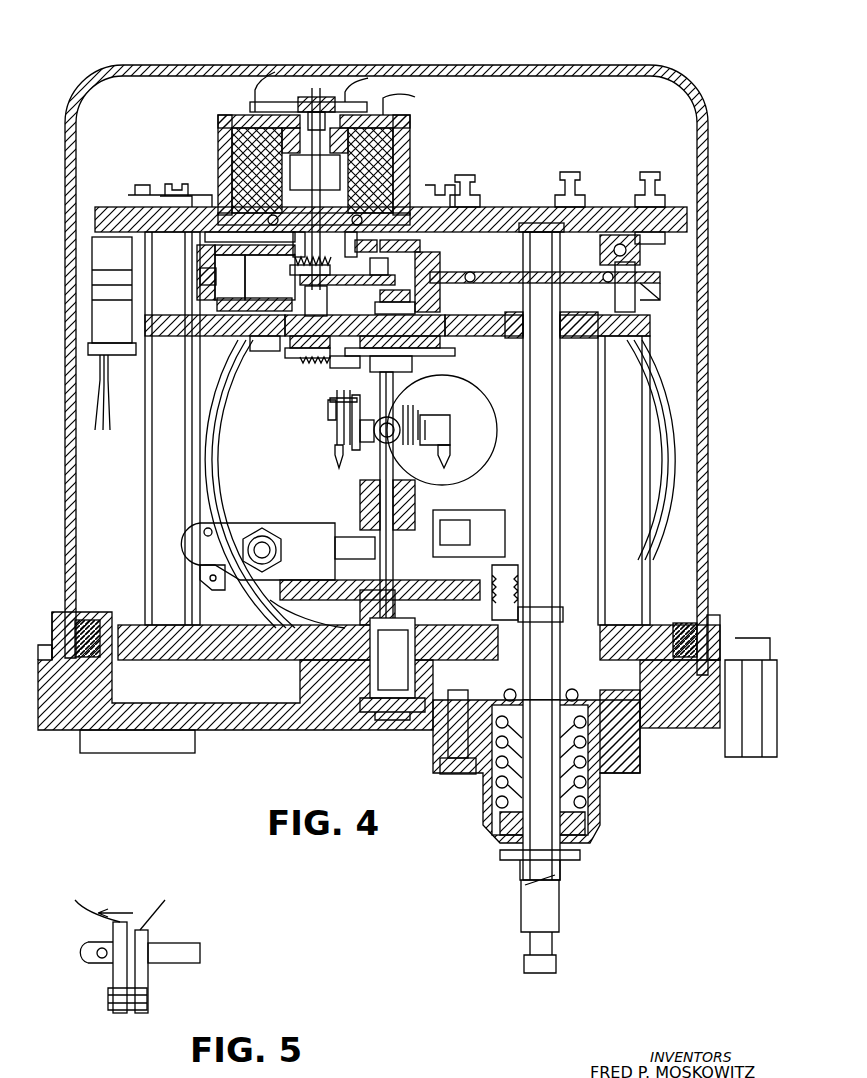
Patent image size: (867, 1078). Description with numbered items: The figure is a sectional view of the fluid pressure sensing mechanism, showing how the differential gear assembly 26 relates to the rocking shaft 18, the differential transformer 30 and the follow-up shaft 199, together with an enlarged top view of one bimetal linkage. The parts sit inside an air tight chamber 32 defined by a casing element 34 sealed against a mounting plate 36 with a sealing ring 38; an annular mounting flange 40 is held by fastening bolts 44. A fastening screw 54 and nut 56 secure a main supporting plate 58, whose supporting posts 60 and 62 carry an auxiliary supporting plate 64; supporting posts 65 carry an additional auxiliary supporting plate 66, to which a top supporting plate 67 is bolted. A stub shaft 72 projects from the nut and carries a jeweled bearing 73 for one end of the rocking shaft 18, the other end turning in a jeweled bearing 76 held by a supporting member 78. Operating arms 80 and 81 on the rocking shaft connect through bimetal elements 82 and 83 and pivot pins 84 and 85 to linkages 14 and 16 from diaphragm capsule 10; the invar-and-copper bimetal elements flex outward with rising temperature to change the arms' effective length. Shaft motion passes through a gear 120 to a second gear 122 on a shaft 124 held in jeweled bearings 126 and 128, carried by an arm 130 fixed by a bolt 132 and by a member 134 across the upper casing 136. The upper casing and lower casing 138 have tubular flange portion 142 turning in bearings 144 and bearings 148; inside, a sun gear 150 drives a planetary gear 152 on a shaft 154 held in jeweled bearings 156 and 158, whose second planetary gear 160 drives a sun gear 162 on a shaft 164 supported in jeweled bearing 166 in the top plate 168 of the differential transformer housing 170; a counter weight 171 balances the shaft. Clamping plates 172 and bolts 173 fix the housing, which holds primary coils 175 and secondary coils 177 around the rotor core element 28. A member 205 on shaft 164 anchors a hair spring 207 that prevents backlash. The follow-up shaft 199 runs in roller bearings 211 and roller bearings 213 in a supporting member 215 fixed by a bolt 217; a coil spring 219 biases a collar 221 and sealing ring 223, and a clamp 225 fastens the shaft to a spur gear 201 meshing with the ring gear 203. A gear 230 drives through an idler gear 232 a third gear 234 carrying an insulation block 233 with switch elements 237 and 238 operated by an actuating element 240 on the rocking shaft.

In FIG. 4, the diaphragm capsule 10 is at (258, 467).
In FIG. 4, the linkage 14 is at (452, 428).
In FIG. 4, the linkage 16 is at (336, 412).
In FIG. 4, the rocking shaft 18 is at (380, 465).
In FIG. 4, the differential gear assembly 26 is at (215, 262).
In FIG. 4, the rotor core element 28 is at (280, 165).
In FIG. 4, the differential transformer 30 is at (205, 158).
In FIG. 4, the air tight chamber 32 is at (487, 88).
In FIG. 4, the casing element 34 is at (560, 70).
In FIG. 4, the mounting plate 36 is at (285, 730).
In FIG. 4, the sealing ring 38 is at (85, 620).
In FIG. 4, the annular mounting flange 40 is at (40, 648).
In FIG. 4, the fastening bolt 44 is at (755, 650).
In FIG. 4, the fastening screw 54 is at (392, 720).
In FIG. 4, the nut 56 is at (360, 620).
In FIG. 4, the main supporting plate 58 is at (240, 660).
In FIG. 4, the supporting post 60 is at (145, 455).
In FIG. 4, the supporting post 62 is at (605, 441).
In FIG. 4, the auxiliary supporting plate 64 is at (205, 336).
In FIG. 4, the supporting post 65 is at (145, 312).
In FIG. 4, the additional auxiliary supporting plate 66 is at (100, 216).
In FIG. 4, the top supporting plate 67 is at (525, 200).
In FIG. 4, the stub shaft 72 is at (405, 605).
In FIG. 4, the jeweled bearing 73 is at (360, 537).
In FIG. 4, the jeweled bearing 76 is at (405, 365).
In FIG. 4, the supporting member 78 is at (405, 310).
In FIG. 4, the operating arm 80 is at (400, 420).
In FIG. 4, the operating arm 81 is at (355, 411).
In FIG. 5, the operating arm 81 is at (185, 966).
In FIG. 4, the bimetal element 82 is at (420, 420).
In FIG. 4, the bimetal element 83 is at (330, 405).
In FIG. 5, the bimetal element 83 is at (108, 980).
In FIG. 4, the pivot pin 84 is at (450, 455).
In FIG. 4, the pivot pin 85 is at (333, 440).
In FIG. 4, the gear 120 is at (440, 356).
In FIG. 4, the second gear 122 is at (300, 360).
In FIG. 4, the shaft 124 is at (320, 304).
In FIG. 4, the jeweled bearing 126 is at (312, 365).
In FIG. 4, the jeweled bearing 128 is at (300, 267).
In FIG. 4, the arm 130 is at (290, 348).
In FIG. 4, the bolt 132 is at (255, 355).
In FIG. 4, the member 134 is at (347, 274).
In FIG. 4, the upper casing 136 is at (248, 230).
In FIG. 4, the lower casing 138 is at (217, 303).
In FIG. 4, the tubular flange portion 142 is at (360, 245).
In FIG. 4, the bearings 144 is at (341, 175).
In FIG. 4, the bearings 148 is at (345, 365).
In FIG. 4, the sun gear 150 is at (270, 277).
In FIG. 4, the planetary gear 152 is at (428, 277).
In FIG. 4, the shaft 154 is at (385, 267).
In FIG. 4, the jeweled bearing 156 is at (409, 296).
In FIG. 4, the jeweled bearing 158 is at (380, 236).
In FIG. 4, the second planetary gear 160 is at (407, 236).
In FIG. 4, the sun gear 162 is at (302, 241).
In FIG. 4, the shaft 164 is at (320, 100).
In FIG. 4, the jeweled bearing 166 is at (350, 98).
In FIG. 4, the top plate 168 is at (410, 110).
In FIG. 4, the differential transformer housing 170 is at (400, 145).
In FIG. 4, the counter weight 171 is at (200, 278).
In FIG. 4, the clamping plate 172 is at (135, 195).
In FIG. 4, the bolt 173 is at (165, 184).
In FIG. 4, the primary coils 175 is at (256, 112).
In FIG. 4, the secondary coils 177 is at (250, 128).
In FIG. 4, the follow-up shaft 199 is at (552, 393).
In FIG. 4, the spur gear 201 is at (655, 272).
In FIG. 4, the ring gear 203 is at (545, 266).
In FIG. 4, the member 205 is at (308, 97).
In FIG. 4, the hair spring 207 is at (305, 110).
In FIG. 4, the roller bearings 211 is at (565, 338).
In FIG. 4, the roller bearings 213 is at (580, 848).
In FIG. 4, the supporting member 215 is at (625, 770).
In FIG. 4, the bolt 217 is at (455, 775).
In FIG. 4, the coil spring 219 is at (600, 815).
In FIG. 4, the collar 221 is at (600, 702).
In FIG. 4, the sealing ring 223 is at (508, 692).
In FIG. 4, the clamp 225 is at (595, 249).
In FIG. 4, the gear 230 is at (565, 605).
In FIG. 4, the idler gear 232 is at (518, 585).
In FIG. 4, the insulation block 233 is at (298, 556).
In FIG. 4, the third gear 234 is at (275, 604).
In FIG. 4, the switch element 237 is at (222, 590).
In FIG. 4, the switch element 238 is at (215, 528).
In FIG. 4, the actuating element 240 is at (440, 537).